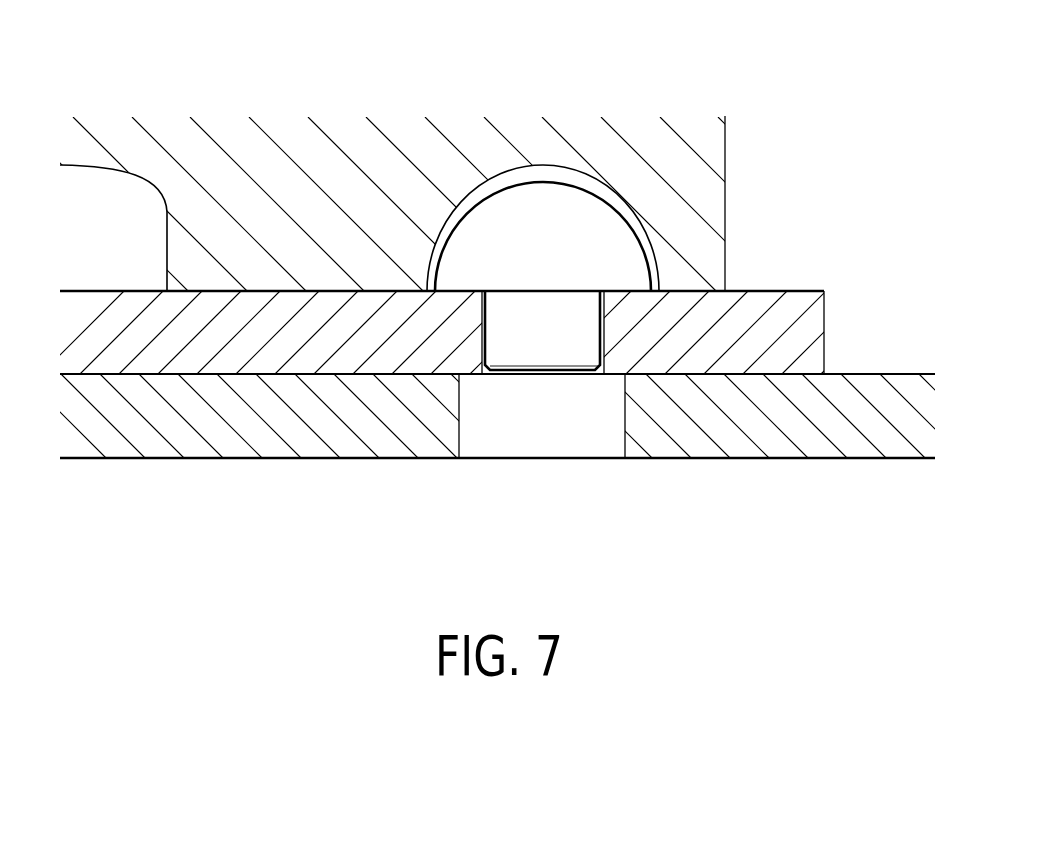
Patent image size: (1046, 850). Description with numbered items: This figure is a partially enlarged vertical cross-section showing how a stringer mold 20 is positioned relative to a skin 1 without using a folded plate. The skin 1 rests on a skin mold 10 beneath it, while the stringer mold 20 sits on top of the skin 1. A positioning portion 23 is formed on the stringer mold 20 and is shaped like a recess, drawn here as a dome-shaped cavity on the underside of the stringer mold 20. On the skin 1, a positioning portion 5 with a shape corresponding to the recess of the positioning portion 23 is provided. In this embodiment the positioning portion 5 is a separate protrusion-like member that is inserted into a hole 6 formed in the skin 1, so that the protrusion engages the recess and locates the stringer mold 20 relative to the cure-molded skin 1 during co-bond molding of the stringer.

The stringer mold 20 is at (355, 138).
The positioning portion 23 is at (561, 169).
The positioning portion 5 is at (606, 238).
The skin 1 is at (813, 320).
The hole 6 is at (603, 330).
The skin mold 10 is at (783, 447).